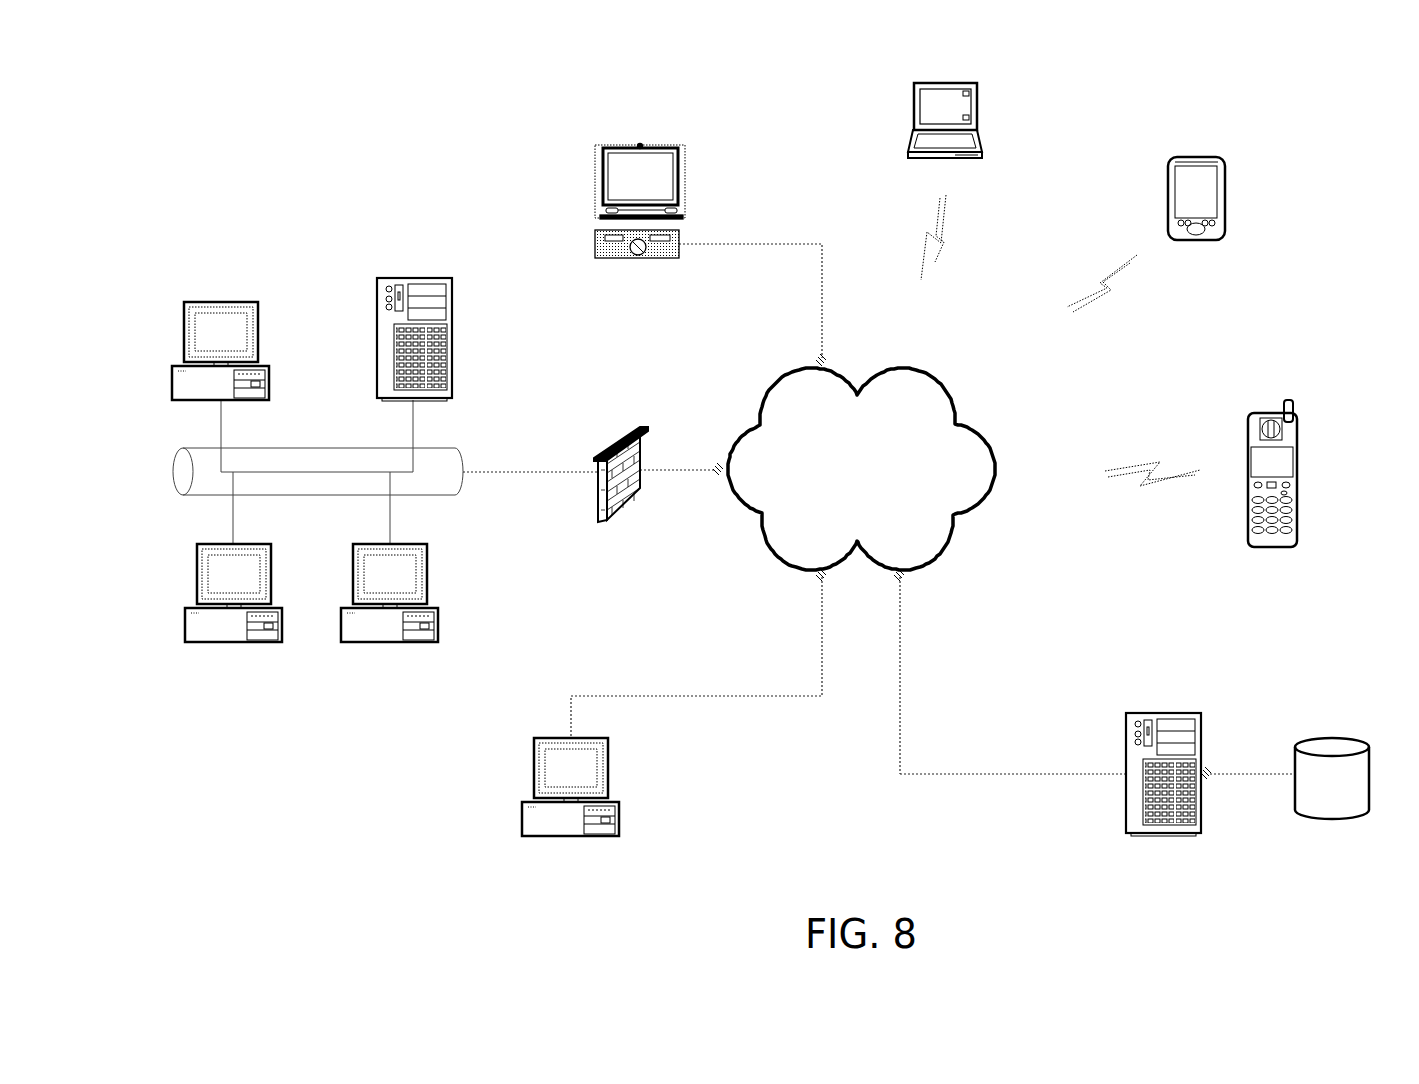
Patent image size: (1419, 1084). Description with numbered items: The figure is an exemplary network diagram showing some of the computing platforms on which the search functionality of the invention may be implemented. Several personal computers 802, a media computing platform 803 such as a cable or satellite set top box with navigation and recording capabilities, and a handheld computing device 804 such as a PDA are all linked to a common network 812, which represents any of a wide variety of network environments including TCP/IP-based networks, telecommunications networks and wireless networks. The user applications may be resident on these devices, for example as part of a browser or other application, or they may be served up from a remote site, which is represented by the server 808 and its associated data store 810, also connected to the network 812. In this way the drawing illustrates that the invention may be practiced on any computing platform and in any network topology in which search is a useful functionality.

The personal computer 802 is at (553, 446).
The media computing platform 803 is at (612, 201).
The handheld computing device 804 is at (1169, 186).
The server 808 is at (1202, 618).
The data store 810 is at (1322, 746).
The network 812 is at (845, 462).